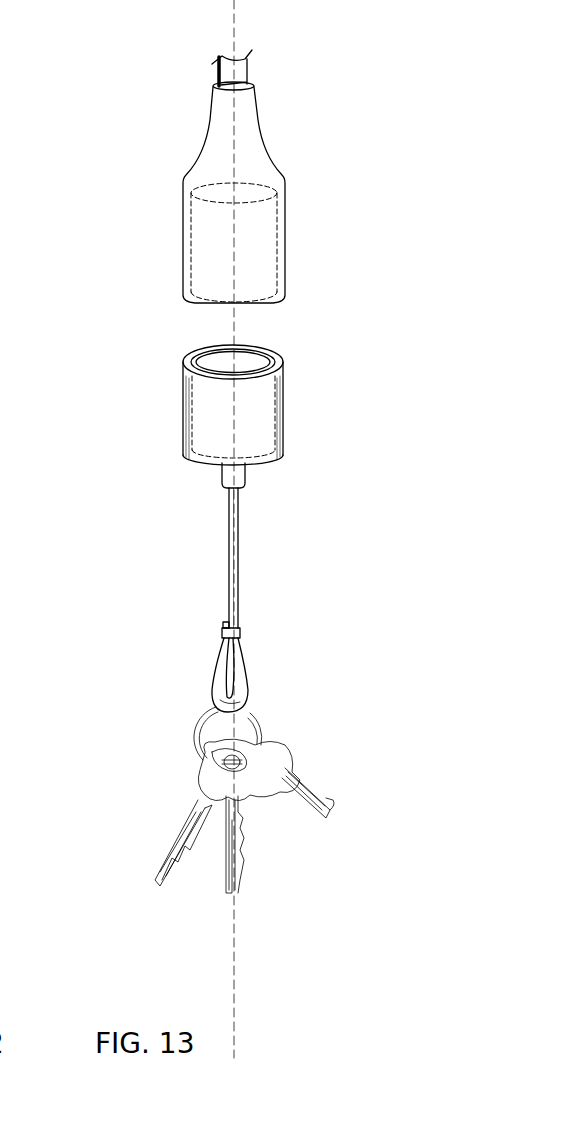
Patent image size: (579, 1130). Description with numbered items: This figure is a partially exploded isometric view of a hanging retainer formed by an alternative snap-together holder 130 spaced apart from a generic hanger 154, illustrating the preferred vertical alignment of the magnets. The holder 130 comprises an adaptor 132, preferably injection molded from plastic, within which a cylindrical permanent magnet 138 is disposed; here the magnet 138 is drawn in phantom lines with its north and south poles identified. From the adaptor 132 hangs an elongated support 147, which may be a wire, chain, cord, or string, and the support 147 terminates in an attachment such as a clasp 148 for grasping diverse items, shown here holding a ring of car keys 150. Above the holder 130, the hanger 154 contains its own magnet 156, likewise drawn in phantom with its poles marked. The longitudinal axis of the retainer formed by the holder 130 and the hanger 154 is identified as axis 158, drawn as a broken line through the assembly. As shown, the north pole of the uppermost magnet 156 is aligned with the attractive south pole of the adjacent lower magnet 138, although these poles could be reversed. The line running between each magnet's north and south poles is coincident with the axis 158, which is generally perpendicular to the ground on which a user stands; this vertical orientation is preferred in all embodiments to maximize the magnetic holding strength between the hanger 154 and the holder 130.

The holder 130 is at (190, 417).
The adaptor 132 is at (183, 379).
The permanent magnet 138 is at (248, 411).
The elongated support 147 is at (231, 582).
The clasp 148 is at (237, 672).
The ring of car keys 150 is at (316, 749).
The hanger 154 is at (198, 84).
The magnet 156 is at (215, 240).
The longitudinal axis 158 is at (233, 13).